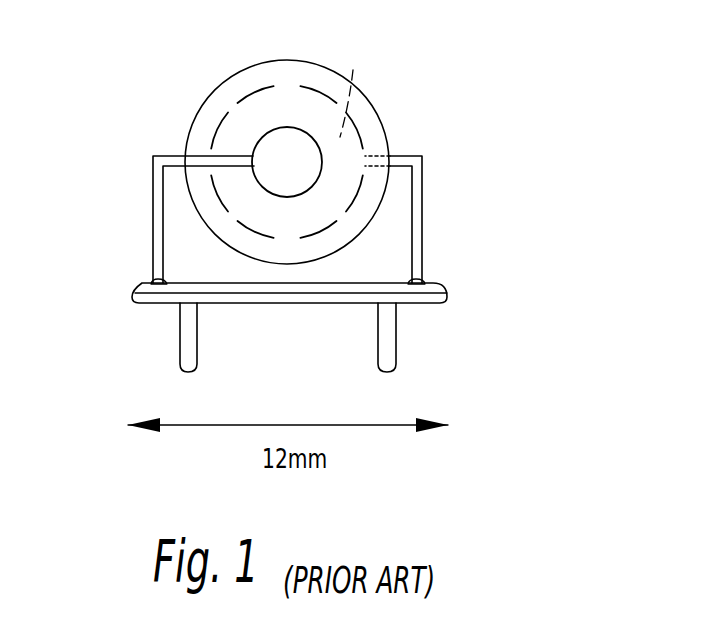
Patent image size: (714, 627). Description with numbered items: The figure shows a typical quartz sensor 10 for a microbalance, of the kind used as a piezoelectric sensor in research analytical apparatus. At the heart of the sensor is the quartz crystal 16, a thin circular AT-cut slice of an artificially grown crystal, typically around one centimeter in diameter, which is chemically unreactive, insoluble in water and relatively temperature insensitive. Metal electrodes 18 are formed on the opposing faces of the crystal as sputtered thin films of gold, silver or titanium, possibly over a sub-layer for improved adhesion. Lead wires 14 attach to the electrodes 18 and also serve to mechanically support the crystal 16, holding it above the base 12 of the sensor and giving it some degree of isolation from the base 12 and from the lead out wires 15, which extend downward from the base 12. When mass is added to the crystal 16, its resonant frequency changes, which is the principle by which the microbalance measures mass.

The quartz sensor 10 is at (92, 126).
The base 12 is at (447, 301).
The lead wires 14 is at (157, 240).
The lead out wires 15 is at (188, 342).
The quartz crystal 16 is at (228, 107).
The metal electrodes 18 is at (302, 153).